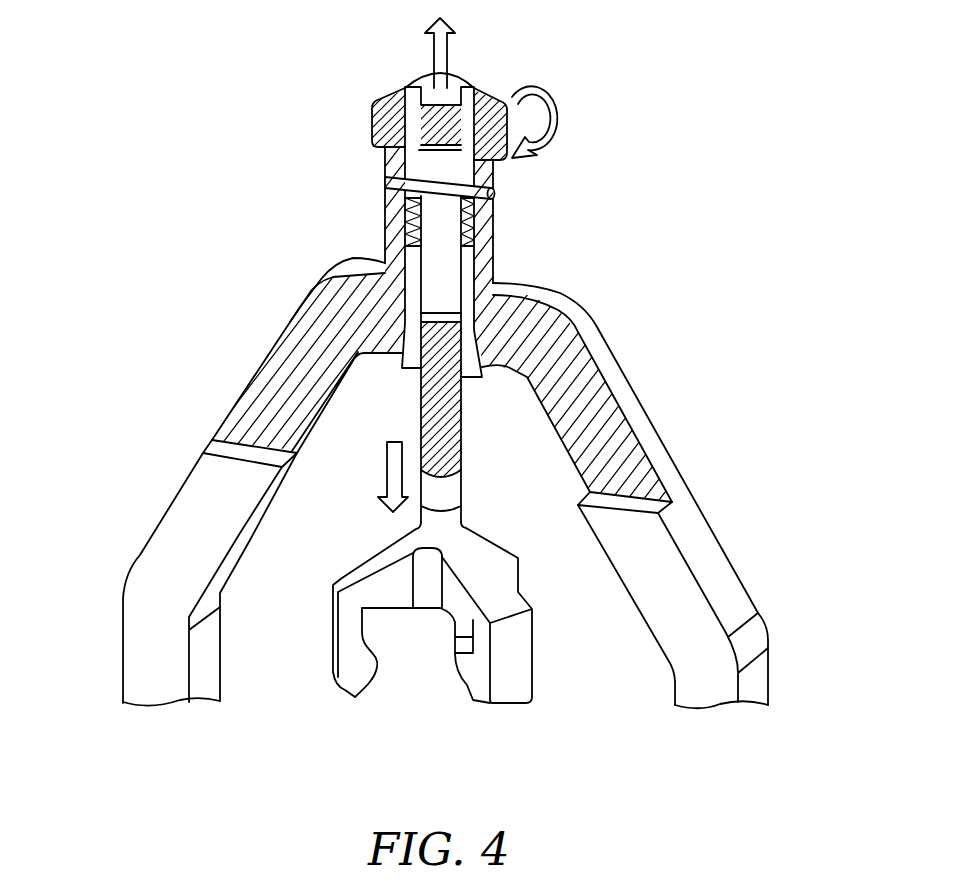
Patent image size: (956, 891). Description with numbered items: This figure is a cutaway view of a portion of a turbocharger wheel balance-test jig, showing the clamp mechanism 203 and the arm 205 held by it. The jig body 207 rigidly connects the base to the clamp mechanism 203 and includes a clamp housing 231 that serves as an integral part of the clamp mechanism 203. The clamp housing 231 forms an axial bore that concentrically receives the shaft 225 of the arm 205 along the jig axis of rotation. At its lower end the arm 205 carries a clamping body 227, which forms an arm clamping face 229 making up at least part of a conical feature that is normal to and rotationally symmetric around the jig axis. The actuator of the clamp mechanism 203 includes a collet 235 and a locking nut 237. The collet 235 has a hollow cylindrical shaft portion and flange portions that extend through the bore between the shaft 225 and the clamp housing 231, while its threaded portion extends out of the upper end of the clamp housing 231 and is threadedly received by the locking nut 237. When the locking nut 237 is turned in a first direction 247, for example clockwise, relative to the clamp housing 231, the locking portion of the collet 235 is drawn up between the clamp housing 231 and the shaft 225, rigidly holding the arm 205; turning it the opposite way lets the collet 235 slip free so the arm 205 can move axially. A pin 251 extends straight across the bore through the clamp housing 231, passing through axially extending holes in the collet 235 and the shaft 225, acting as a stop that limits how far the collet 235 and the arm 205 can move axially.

The clamp mechanism 203 is at (466, 231).
The arm 205 is at (437, 413).
The jig body 207 is at (580, 383).
The shaft 225 is at (443, 450).
The clamping body 227 is at (397, 586).
The arm clamping face 229 is at (370, 678).
The clamp housing 231 is at (488, 260).
The collet 235 is at (410, 228).
The locking nut 237 is at (383, 130).
The first direction 247 is at (548, 115).
The pin 251 is at (400, 182).